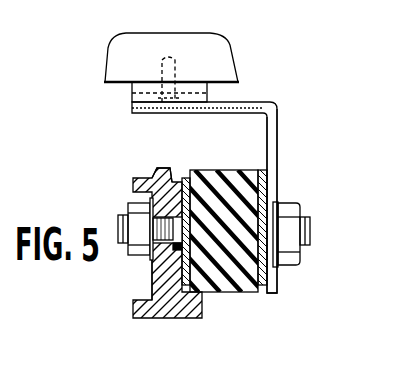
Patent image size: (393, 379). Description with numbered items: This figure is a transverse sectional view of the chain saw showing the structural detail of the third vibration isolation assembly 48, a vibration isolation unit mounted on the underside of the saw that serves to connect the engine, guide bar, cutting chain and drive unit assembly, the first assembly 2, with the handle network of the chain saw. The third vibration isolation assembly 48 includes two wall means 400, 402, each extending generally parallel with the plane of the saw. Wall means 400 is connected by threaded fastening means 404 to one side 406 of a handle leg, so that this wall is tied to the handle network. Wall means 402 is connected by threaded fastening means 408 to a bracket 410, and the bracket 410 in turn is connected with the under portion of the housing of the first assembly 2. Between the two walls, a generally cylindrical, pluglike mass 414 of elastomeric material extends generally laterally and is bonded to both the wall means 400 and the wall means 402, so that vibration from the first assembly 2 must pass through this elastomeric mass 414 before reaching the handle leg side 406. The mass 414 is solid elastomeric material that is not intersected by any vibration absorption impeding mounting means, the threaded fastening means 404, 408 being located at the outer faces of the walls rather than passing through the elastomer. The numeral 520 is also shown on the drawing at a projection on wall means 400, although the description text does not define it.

The first assembly 2 is at (4, 44).
The third vibration isolation assembly 48 is at (255, 296).
The bracket 410 is at (277, 150).
The pluglike mass 414 is at (220, 296).
The wall means 402 is at (262, 182).
The wall means 400 is at (182, 180).
The projection 520 is at (160, 168).
The one side of handle leg 406 is at (152, 278).
The threaded fastening means 404 is at (128, 214).
The threaded fastening means 408 is at (284, 204).